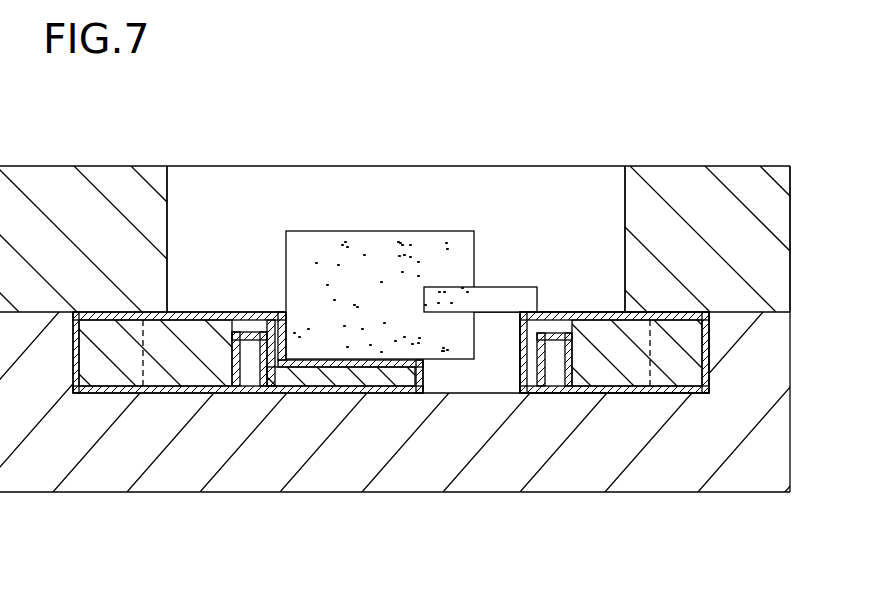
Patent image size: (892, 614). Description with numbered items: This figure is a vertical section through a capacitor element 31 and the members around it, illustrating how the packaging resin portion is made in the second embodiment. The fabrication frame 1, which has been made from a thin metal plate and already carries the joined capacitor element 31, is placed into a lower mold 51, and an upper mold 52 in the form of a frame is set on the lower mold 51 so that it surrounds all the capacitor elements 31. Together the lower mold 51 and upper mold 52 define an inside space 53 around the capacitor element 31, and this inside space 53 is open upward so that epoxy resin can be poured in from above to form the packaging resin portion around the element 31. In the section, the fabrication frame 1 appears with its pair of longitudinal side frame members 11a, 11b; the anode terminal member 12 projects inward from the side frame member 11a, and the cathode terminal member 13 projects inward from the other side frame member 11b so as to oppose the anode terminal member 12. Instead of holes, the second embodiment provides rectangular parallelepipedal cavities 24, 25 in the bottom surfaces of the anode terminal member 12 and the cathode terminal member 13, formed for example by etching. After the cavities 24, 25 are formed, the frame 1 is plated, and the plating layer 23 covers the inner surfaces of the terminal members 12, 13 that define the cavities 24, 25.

The fabrication frame 1 is at (716, 340).
The side frame member 11a is at (680, 370).
The side frame member 11b is at (93, 365).
The anode terminal member 12 is at (596, 365).
The cathode terminal member 13 is at (341, 378).
The plating layer 23 is at (113, 378).
The cavity 24 is at (563, 365).
The cavity 25 is at (252, 362).
The capacitor element 31 is at (403, 224).
The lower mold 51 is at (670, 470).
The upper mold 52 is at (717, 192).
The inside space 53 is at (227, 218).